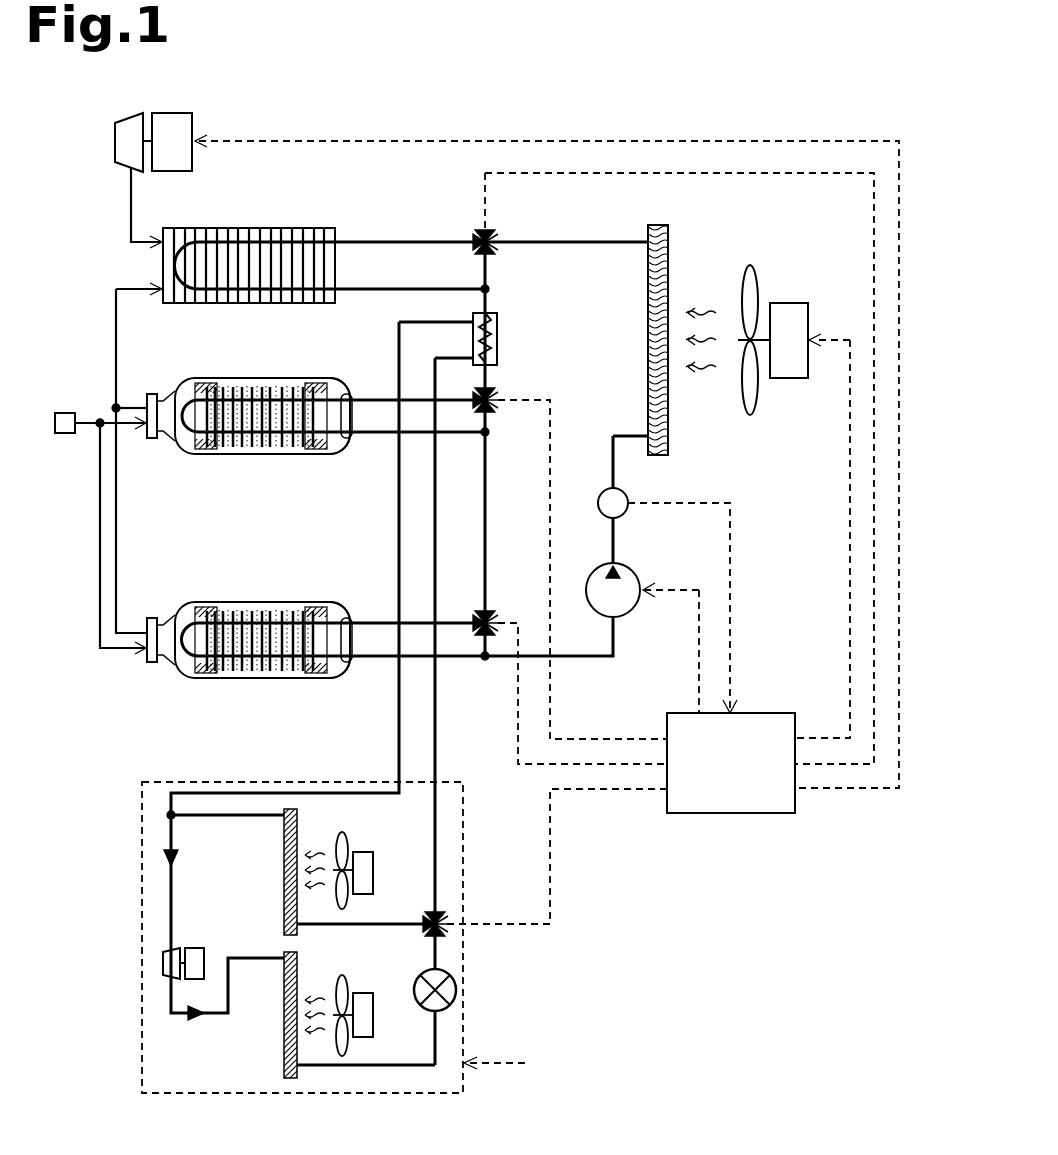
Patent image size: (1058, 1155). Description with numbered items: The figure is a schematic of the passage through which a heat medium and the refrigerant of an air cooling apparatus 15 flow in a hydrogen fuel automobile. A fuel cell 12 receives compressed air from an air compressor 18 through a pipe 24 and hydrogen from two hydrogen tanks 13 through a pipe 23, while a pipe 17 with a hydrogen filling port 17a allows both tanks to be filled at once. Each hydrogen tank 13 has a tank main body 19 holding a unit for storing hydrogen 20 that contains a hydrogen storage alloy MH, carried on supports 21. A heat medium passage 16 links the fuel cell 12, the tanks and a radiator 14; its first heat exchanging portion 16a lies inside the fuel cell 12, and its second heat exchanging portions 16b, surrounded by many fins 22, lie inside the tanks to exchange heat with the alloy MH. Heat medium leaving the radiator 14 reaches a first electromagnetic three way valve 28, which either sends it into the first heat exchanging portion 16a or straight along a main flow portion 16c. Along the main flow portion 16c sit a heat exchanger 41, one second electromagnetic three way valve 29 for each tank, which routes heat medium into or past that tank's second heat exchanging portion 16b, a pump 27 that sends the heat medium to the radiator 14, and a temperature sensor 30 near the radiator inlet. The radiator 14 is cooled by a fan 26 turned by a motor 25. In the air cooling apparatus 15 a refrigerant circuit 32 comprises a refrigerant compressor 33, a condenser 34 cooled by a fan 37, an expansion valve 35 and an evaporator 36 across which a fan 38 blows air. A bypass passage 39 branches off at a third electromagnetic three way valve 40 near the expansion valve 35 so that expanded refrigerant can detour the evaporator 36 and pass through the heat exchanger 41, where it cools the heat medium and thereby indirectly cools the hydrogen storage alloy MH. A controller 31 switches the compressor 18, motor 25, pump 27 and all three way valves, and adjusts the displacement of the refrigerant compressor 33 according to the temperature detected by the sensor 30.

The fuel cell 12 is at (311, 227).
The hydrogen tank 13 is at (180, 453).
The radiator 14 is at (668, 438).
The air cooling apparatus 15 is at (354, 937).
The heat medium passage 16 is at (583, 238).
The first heat exchanging portion 16a is at (252, 238).
The second heat exchanging portion 16b is at (268, 388).
The main flow portion 16c is at (514, 501).
The pipe 17 is at (100, 551).
The hydrogen filling port 17a is at (63, 435).
The air compressor 18 is at (167, 112).
The tank main body 19 is at (345, 458).
The unit for storing hydrogen 20 is at (238, 450).
The support 21 is at (212, 452).
The fin 22 is at (250, 388).
The pipe 23 is at (116, 322).
The pipe 24 is at (131, 213).
The motor 25 is at (790, 303).
The fan 26 is at (757, 398).
The pump 27 is at (627, 617).
The first electromagnetic three way valve 28 is at (480, 230).
The second electromagnetic three way valve 29 is at (494, 384).
The temperature sensor 30 is at (602, 490).
The controller 31 is at (770, 813).
The refrigerant circuit 32 is at (171, 898).
The refrigerant compressor 33 is at (197, 947).
The condenser 34 is at (283, 1050).
The expansion valve 35 is at (458, 987).
The evaporator 36 is at (283, 845).
The fan 37 is at (347, 977).
The fan 38 is at (348, 834).
The bypass passage 39 is at (437, 832).
The third electromagnetic three way valve 40 is at (423, 917).
The heat exchanger 41 is at (500, 335).
The hydrogen storage alloy MH is at (295, 376).